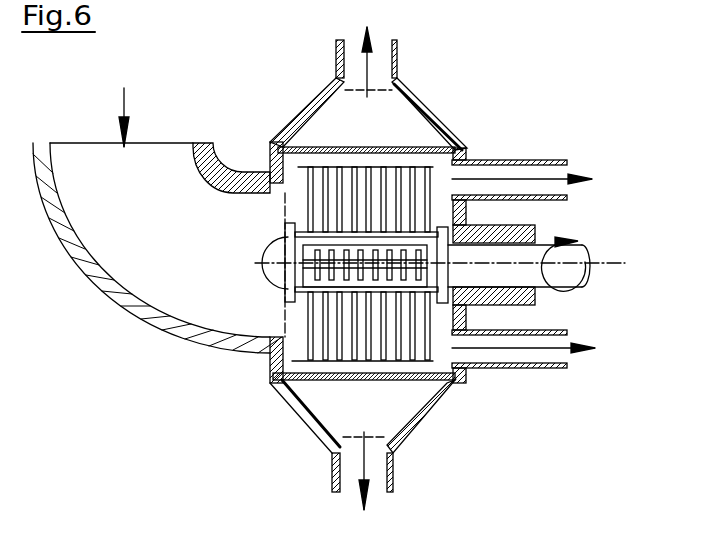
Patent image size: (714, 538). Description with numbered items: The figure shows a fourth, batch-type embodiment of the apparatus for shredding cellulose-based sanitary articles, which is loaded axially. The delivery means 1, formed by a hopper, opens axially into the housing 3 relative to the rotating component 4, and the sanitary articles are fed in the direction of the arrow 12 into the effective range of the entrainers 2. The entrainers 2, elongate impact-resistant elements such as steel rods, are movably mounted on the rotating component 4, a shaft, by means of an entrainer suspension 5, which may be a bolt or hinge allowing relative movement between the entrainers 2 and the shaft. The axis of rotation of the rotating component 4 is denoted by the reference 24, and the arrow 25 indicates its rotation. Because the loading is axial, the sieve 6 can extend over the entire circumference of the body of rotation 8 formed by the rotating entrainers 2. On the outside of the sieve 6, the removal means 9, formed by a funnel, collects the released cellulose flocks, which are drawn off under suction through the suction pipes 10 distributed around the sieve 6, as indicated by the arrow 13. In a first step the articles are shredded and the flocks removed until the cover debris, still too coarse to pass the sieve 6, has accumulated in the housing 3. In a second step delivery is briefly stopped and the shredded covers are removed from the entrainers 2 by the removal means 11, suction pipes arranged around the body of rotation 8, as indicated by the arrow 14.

The delivery means 1 is at (150, 287).
The entrainers 2 is at (445, 228).
The housing 3 is at (268, 355).
The rotating component 4 is at (280, 292).
The entrainer suspension 5 is at (442, 222).
The sieve 6 is at (290, 405).
The body of rotation 8 is at (293, 113).
The removal means 9 is at (378, 118).
The pipe 10 is at (397, 55).
The removal means 11 is at (553, 160).
The arrow 12 is at (125, 108).
The arrow 13 is at (367, 64).
The arrow 14 is at (568, 196).
The axis of rotation 24 is at (592, 265).
The arrow 25 is at (575, 240).